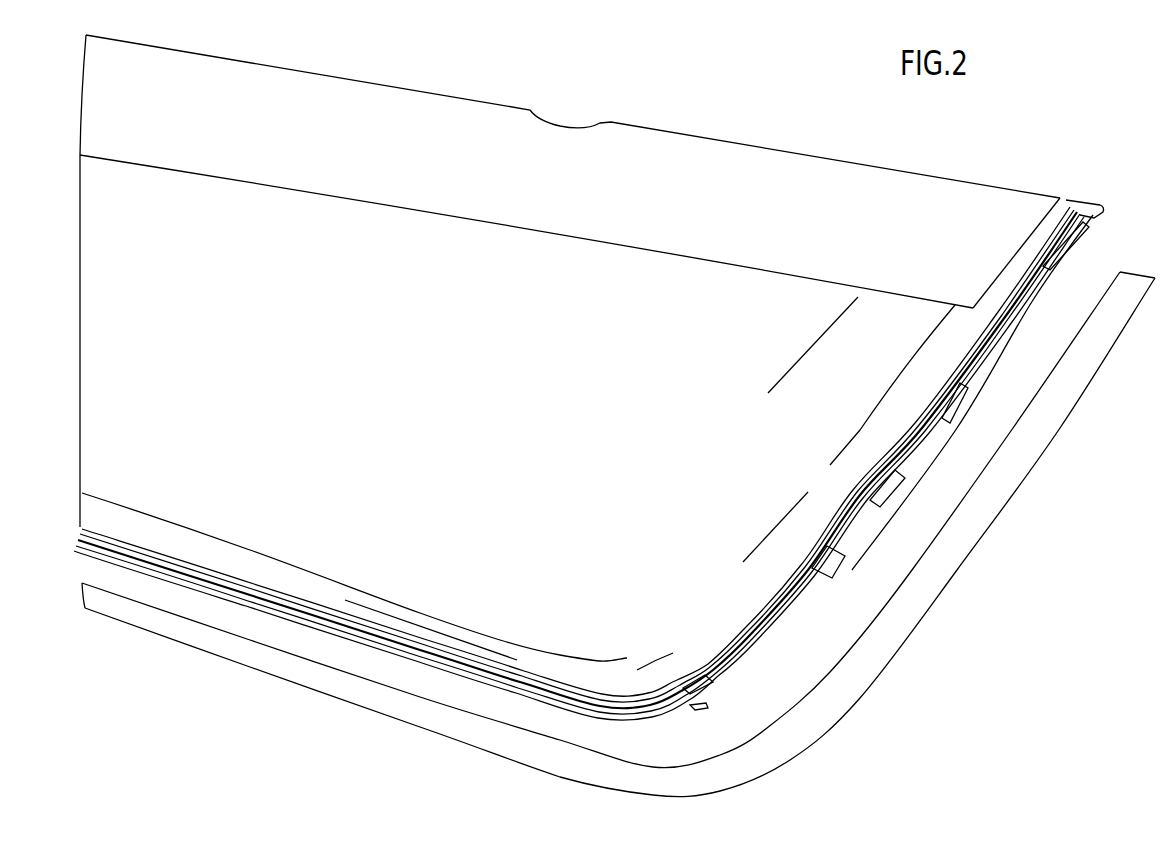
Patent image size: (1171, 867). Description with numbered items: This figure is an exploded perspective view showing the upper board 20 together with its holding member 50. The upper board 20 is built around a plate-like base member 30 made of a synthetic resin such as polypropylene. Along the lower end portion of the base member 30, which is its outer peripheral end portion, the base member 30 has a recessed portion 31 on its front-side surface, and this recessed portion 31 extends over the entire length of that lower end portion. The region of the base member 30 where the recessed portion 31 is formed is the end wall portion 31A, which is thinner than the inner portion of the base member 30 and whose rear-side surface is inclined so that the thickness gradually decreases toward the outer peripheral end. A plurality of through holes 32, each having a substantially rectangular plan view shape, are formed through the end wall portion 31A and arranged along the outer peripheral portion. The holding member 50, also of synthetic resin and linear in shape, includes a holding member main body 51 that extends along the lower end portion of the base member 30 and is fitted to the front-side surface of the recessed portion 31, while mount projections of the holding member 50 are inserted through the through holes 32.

The upper board 20 is at (413, 73).
The base member 30 is at (638, 292).
The recessed portion 31 is at (990, 362).
The end wall portion 31A is at (997, 336).
The through hole 32 is at (885, 483).
The holding member 50 is at (862, 698).
The holding member main body 51 is at (882, 648).